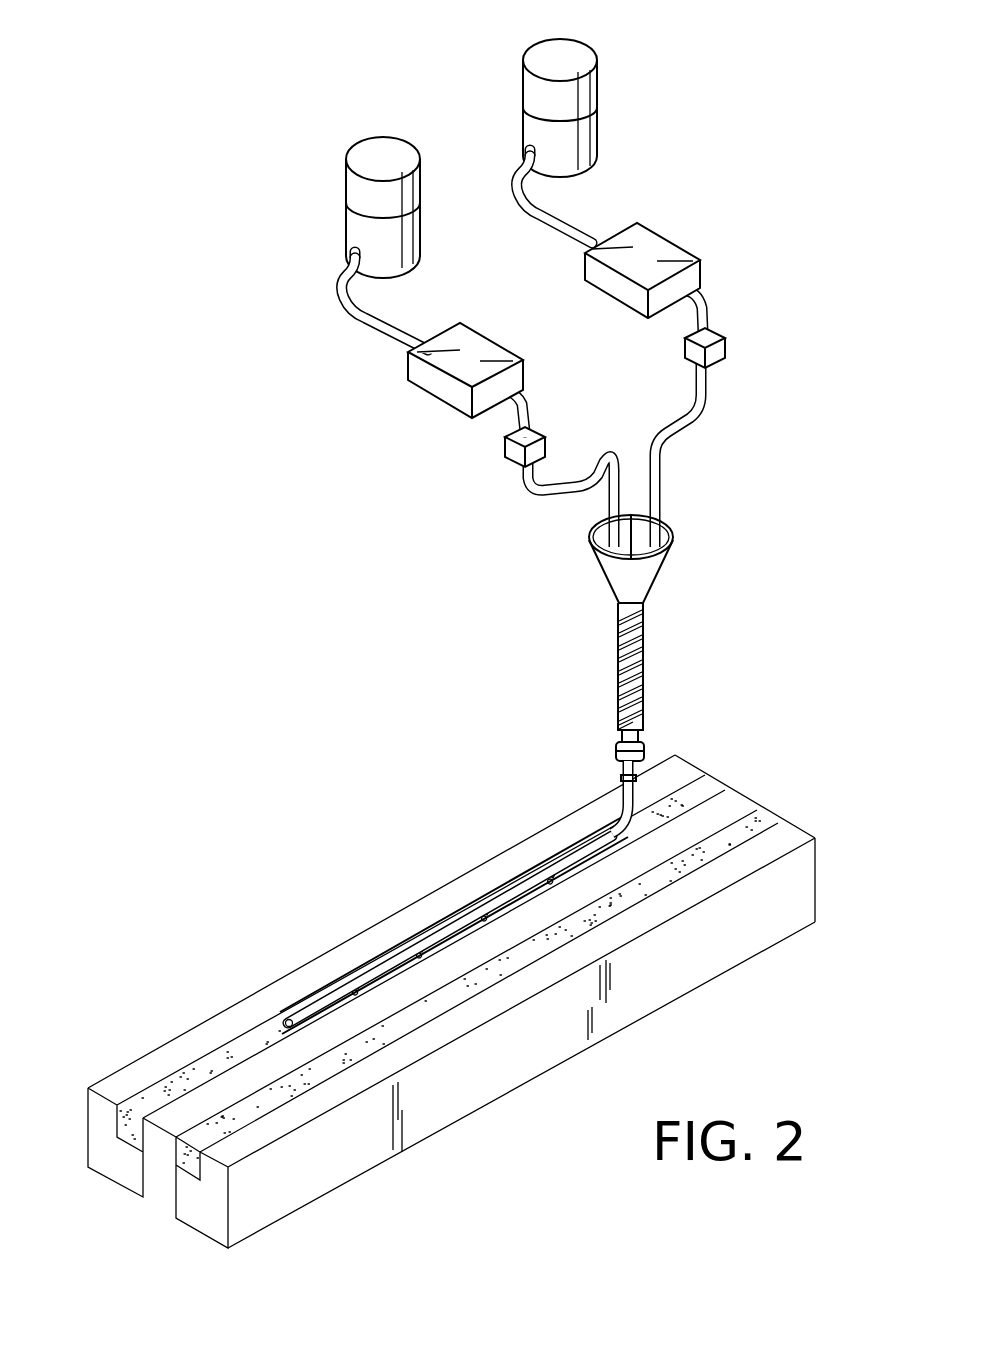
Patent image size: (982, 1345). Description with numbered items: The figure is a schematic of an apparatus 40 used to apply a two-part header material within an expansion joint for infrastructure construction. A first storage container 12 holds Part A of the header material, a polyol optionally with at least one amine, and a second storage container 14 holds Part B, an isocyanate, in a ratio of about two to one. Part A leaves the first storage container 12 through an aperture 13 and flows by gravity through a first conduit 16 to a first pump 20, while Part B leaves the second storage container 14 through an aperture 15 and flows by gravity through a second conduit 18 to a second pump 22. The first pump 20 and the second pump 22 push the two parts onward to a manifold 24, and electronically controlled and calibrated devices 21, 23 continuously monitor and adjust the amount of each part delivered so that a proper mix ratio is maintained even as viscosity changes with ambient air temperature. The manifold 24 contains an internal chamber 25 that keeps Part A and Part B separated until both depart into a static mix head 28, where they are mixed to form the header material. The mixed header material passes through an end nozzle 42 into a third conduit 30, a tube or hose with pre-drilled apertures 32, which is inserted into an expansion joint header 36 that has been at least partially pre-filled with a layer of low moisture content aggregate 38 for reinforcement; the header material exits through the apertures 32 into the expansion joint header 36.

The first storage container 12 is at (352, 207).
The aperture 13 is at (345, 263).
The second storage container 14 is at (595, 90).
The aperture 15 is at (527, 151).
The first conduit 16 is at (366, 319).
The second conduit 18 is at (570, 222).
The first pump 20 is at (438, 394).
The electronically controlled and calibrated device 21 is at (517, 450).
The second pump 22 is at (705, 272).
The electronically controlled and calibrated device 23 is at (727, 353).
The manifold 24 is at (626, 559).
The internal chamber 25 is at (665, 535).
The static mix head 28 is at (617, 690).
The third conduit 30 is at (312, 1002).
The apertures 32 is at (482, 896).
The expansion joint header 36 is at (485, 1078).
The low moisture content aggregate 38 is at (140, 1097).
The apparatus 40 is at (521, 436).
The end nozzle 42 is at (616, 750).